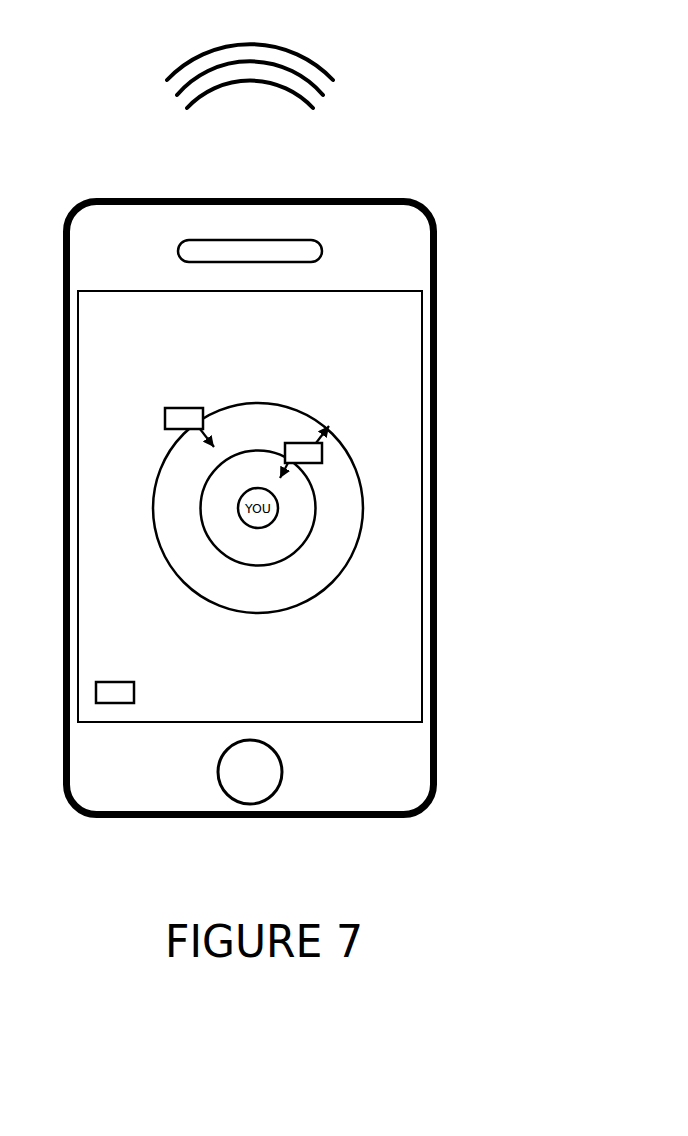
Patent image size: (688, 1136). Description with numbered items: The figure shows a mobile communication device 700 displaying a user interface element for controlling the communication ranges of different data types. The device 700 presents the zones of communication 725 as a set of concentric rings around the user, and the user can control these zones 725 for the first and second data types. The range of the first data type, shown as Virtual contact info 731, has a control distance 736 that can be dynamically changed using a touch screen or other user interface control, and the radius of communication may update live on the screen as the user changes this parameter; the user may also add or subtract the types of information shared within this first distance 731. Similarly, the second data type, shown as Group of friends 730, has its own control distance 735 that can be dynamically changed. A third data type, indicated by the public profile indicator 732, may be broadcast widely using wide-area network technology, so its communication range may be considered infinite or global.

The mobile device 700 is at (426, 188).
The zones of communication 725 is at (250, 64).
The Group of friends 730 is at (182, 390).
The Virtual contact info 731 is at (264, 427).
The public profile indicator 732 is at (105, 676).
The control distance 735 is at (155, 433).
The control distance 736 is at (334, 458).